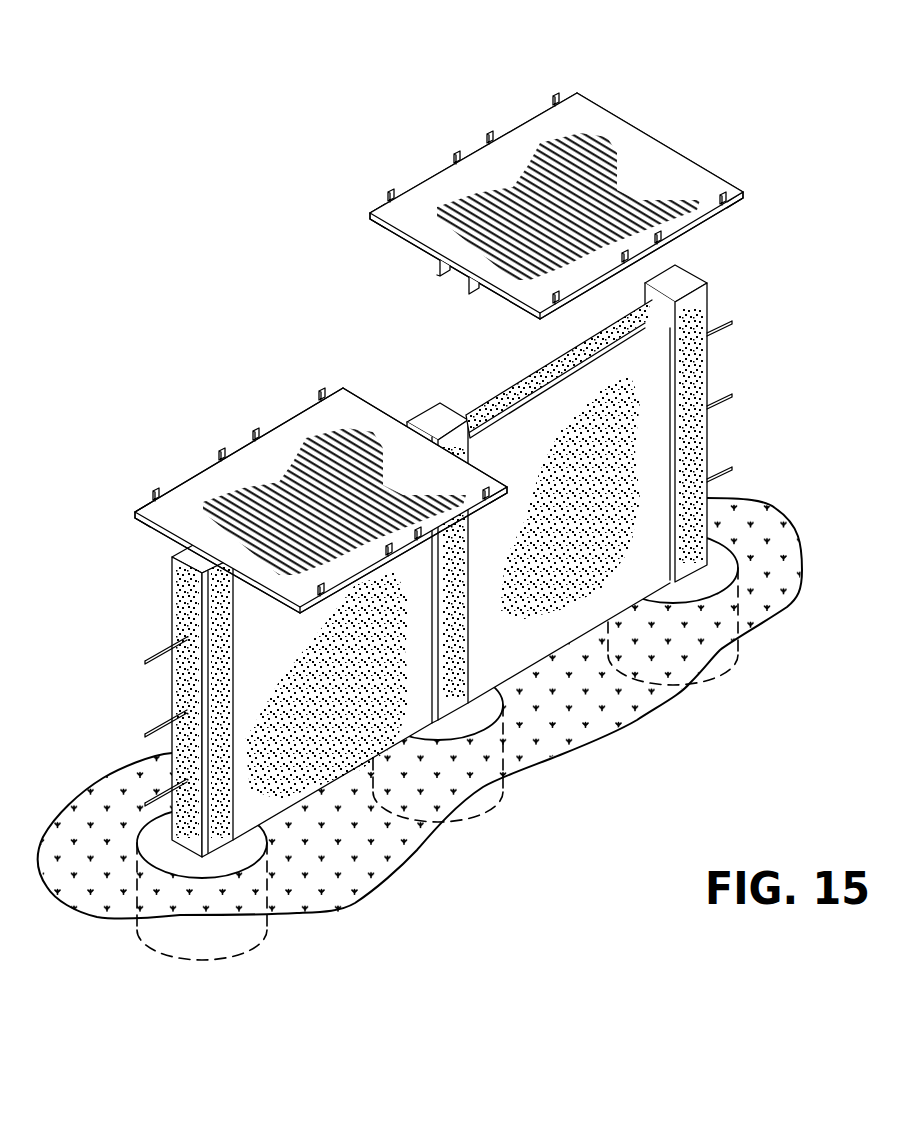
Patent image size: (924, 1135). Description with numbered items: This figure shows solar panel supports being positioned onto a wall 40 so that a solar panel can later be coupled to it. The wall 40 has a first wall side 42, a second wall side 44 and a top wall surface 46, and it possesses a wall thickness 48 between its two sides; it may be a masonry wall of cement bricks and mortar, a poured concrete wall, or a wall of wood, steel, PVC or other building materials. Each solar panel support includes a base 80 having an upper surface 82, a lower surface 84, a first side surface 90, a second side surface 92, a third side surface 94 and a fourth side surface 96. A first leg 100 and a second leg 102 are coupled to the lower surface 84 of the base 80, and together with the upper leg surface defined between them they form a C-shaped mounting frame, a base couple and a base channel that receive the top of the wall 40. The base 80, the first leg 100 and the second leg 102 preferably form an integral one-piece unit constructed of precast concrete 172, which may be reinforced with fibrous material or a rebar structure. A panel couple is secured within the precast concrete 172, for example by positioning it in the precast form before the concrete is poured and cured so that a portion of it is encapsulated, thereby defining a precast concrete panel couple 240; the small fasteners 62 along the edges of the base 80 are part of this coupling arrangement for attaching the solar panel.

The wall 40 is at (345, 747).
The first wall side 42 is at (385, 733).
The second wall side 44 is at (550, 357).
The top wall surface 46 is at (637, 310).
The wall thickness 48 is at (613, 338).
The clip 62 is at (557, 97).
The base 80 is at (431, 377).
The upper surface 82 is at (298, 427).
The lower surface 84 is at (138, 525).
The first side surface 90 is at (300, 612).
The second side surface 92 is at (197, 475).
The third side surface 94 is at (387, 413).
The fourth side surface 96 is at (167, 535).
The first leg 100 is at (468, 282).
The second leg 102 is at (437, 268).
The precast concrete 172 is at (258, 573).
The precast concrete panel couple 240 is at (491, 135).